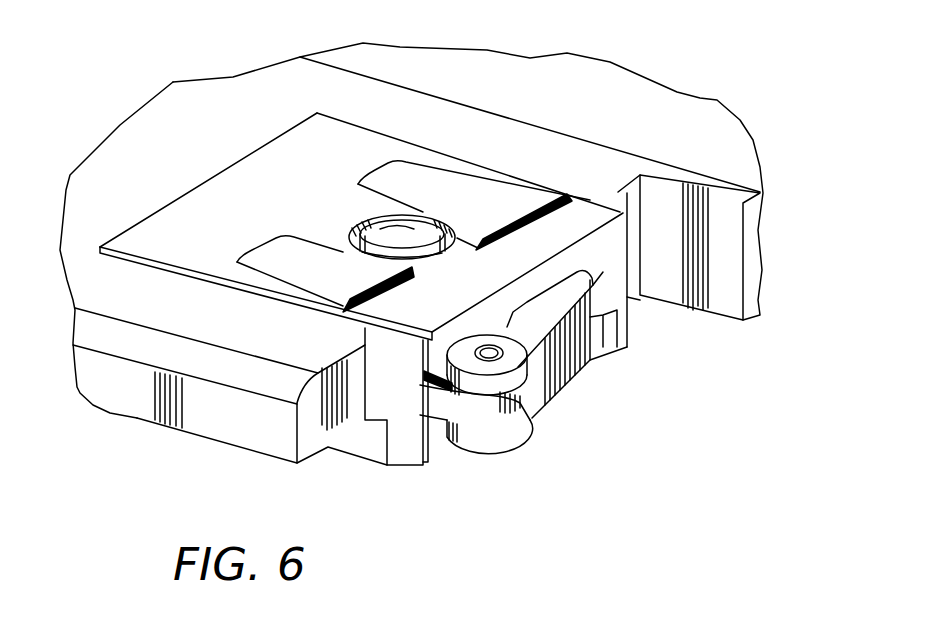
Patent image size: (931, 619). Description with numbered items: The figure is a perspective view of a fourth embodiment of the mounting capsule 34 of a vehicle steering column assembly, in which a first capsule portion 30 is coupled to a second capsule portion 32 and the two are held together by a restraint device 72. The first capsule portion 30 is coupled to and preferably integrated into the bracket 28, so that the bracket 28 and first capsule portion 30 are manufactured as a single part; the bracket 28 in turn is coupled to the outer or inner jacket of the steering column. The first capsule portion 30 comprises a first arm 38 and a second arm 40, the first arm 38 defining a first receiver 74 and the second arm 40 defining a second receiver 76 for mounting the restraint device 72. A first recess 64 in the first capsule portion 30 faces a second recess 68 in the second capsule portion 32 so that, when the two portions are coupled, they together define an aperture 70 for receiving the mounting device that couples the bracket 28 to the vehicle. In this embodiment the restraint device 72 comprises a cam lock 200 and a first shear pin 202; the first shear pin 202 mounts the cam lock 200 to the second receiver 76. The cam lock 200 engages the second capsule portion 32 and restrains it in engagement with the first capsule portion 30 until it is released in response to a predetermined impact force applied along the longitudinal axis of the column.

The bracket 28 is at (148, 427).
The first capsule portion 30 is at (172, 245).
The second capsule portion 32 is at (588, 230).
The mounting capsule 34 is at (415, 478).
The first arm 38 is at (614, 271).
The second arm 40 is at (418, 425).
The first recess 64 is at (407, 226).
The second recess 68 is at (422, 224).
The aperture 70 is at (350, 220).
The restraint device 72 is at (573, 405).
The first receiver 74 is at (605, 298).
The second receiver 76 is at (515, 410).
The cam lock 200 is at (565, 374).
The first shear pin 202 is at (522, 388).